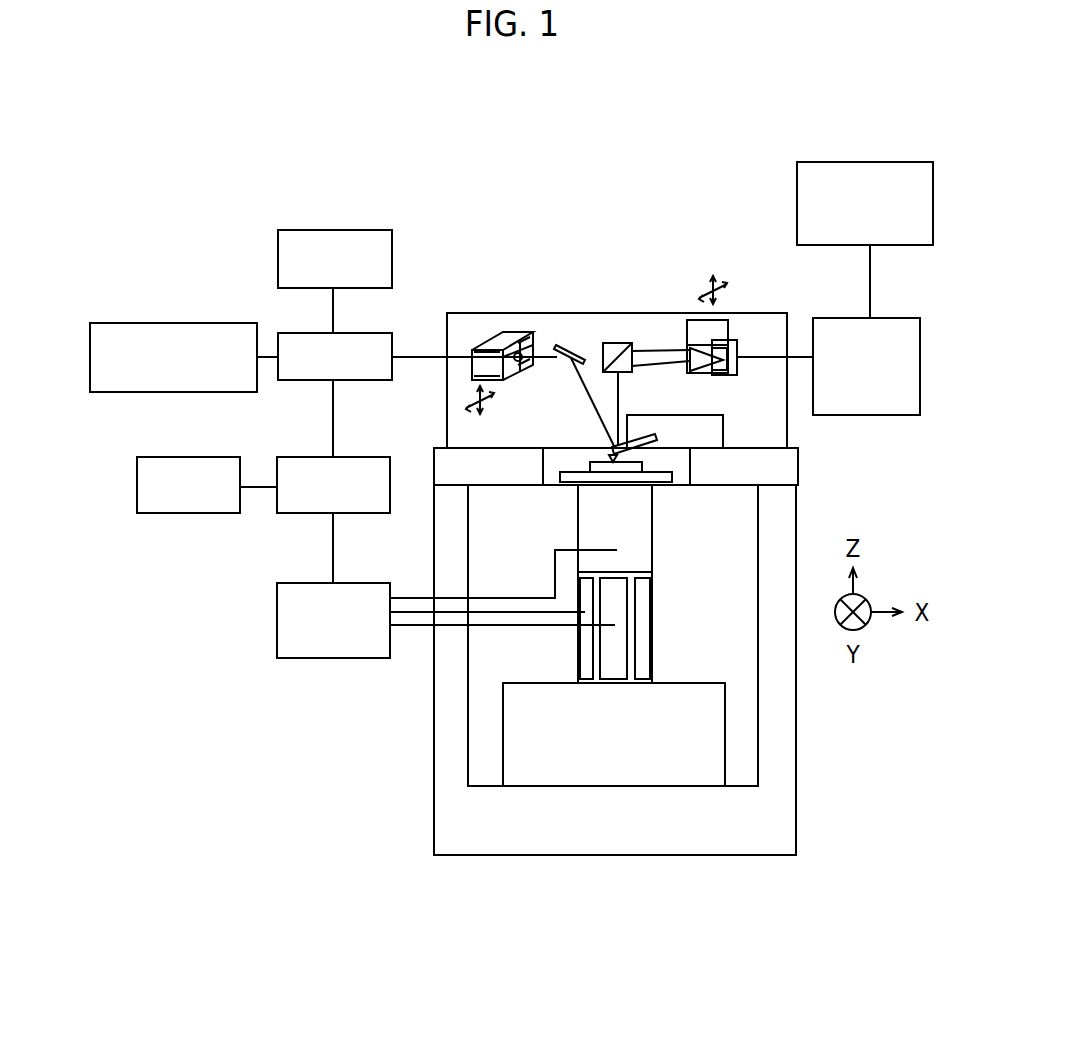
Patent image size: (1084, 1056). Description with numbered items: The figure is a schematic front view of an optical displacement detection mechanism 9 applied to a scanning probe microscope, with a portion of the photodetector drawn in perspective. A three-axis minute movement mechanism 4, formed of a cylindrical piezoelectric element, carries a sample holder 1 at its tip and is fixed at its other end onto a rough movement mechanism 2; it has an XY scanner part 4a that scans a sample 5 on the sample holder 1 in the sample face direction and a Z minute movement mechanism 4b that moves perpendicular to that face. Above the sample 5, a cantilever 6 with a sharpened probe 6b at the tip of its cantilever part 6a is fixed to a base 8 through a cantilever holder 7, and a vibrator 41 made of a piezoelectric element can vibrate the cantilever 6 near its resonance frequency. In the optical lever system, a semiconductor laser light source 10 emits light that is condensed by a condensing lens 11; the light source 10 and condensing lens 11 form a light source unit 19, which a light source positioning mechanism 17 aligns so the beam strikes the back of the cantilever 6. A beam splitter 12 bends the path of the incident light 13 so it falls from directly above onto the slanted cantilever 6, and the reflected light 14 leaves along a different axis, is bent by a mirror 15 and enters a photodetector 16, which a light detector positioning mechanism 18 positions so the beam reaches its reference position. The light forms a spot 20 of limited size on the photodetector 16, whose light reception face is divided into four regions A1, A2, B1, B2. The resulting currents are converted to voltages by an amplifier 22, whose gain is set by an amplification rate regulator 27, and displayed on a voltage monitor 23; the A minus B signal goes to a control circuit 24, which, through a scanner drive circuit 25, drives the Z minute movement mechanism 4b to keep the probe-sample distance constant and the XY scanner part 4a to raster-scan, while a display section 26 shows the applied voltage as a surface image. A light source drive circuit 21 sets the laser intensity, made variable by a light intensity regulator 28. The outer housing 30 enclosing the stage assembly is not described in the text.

The sample holder 1 is at (571, 486).
The rough movement mechanism 2 is at (703, 742).
The three-axis minute movement mechanism 4 is at (654, 580).
The XY scanner part 4a is at (644, 650).
The Z minute movement mechanism 4b is at (636, 540).
The sample 5 is at (643, 470).
The cantilever 6 is at (640, 441).
The cantilever part 6a is at (612, 452).
The probe 6b is at (578, 457).
The cantilever holder 7 is at (712, 433).
The base 8 is at (797, 480).
The optical displacement detection mechanism 9 is at (681, 250).
The light source 10 is at (735, 352).
The condensing lens 11 is at (688, 353).
The beam splitter 12 is at (612, 346).
The incident light 13 is at (621, 394).
The reflected light 14 is at (582, 383).
The mirror 15 is at (564, 343).
The photodetector 16 is at (498, 338).
The light source positioning mechanism 17 is at (715, 330).
The light detector positioning mechanism 18 is at (520, 339).
The light source unit 19 is at (713, 374).
The spot 20 is at (472, 376).
The light source drive circuit 21 is at (899, 318).
The amplifier 22 is at (306, 380).
The voltage monitor 23 is at (305, 230).
The control circuit 24 is at (360, 513).
The scanner drive circuit 25 is at (328, 658).
The display section 26 is at (189, 513).
The amplification rate regulator 27 is at (133, 323).
The light intensity regulator 28 is at (877, 162).
The housing 30 is at (609, 855).
The vibrator 41 is at (784, 465).
The light reception face division A1 is at (527, 350).
The light reception face division A2 is at (468, 350).
The light reception face division B1 is at (532, 350).
The light reception face division B2 is at (513, 368).